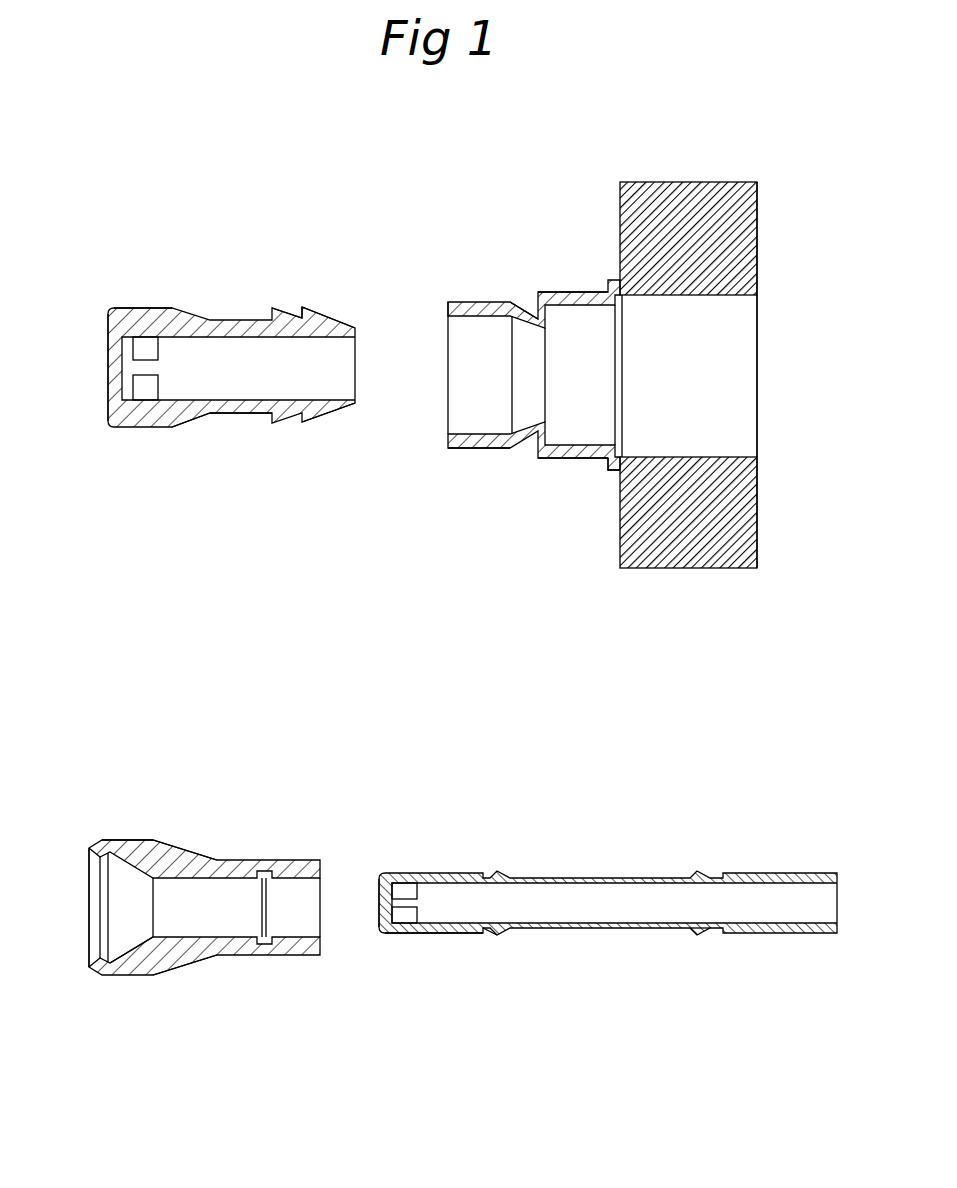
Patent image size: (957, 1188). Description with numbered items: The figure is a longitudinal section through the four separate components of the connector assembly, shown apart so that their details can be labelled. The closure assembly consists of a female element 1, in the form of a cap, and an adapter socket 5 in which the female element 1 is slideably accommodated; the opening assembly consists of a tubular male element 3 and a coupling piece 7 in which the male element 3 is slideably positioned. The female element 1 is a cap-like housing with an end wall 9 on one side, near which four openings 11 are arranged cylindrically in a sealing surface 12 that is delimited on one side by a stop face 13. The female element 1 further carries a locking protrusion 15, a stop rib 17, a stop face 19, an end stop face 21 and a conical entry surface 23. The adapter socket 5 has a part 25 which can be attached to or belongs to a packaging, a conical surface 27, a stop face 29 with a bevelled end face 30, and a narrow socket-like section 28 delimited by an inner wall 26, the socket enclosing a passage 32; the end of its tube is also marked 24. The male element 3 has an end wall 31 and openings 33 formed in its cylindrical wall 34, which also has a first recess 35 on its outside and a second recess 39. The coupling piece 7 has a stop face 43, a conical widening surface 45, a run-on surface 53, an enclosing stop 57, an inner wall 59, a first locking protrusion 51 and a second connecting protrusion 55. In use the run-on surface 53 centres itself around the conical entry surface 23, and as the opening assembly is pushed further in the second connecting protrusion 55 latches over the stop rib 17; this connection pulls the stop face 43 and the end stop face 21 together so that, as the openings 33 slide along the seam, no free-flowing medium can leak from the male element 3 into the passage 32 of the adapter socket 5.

The female element 1 is at (228, 303).
The tubular male element 3 is at (620, 868).
The adapter socket 5 is at (763, 171).
The coupling piece 7 is at (213, 969).
The end wall 9 is at (112, 380).
The openings 11 is at (148, 345).
The sealing surface 12 is at (127, 309).
The stop face 13 is at (183, 422).
The locking protrusion 15 is at (213, 416).
The stop rib 17 is at (303, 316).
The stop face 19 is at (268, 316).
The end stop face 21 is at (352, 406).
The conical entry surface 23 is at (337, 316).
The tube end 24 is at (458, 303).
The part 25 is at (660, 205).
The inner wall 26 is at (550, 450).
The conical surface 27 is at (512, 445).
The narrow socket-like section 28 is at (587, 420).
The stop face 29 is at (555, 308).
The bevelled end face 30 is at (540, 324).
The end wall 31 is at (378, 906).
The passage 32 is at (742, 385).
The openings 33 is at (405, 935).
The cylindrical wall 34 is at (442, 935).
The first recess 35 is at (490, 935).
The second recess 39 is at (720, 935).
The stop face 43 is at (140, 948).
The conical widening surface 45 is at (118, 895).
The first locking protrusion 51 is at (260, 862).
The run-on surface 53 is at (93, 853).
The second connecting protrusion 55 is at (97, 838).
The enclosing stop 57 is at (130, 838).
The inner wall 59 is at (178, 880).